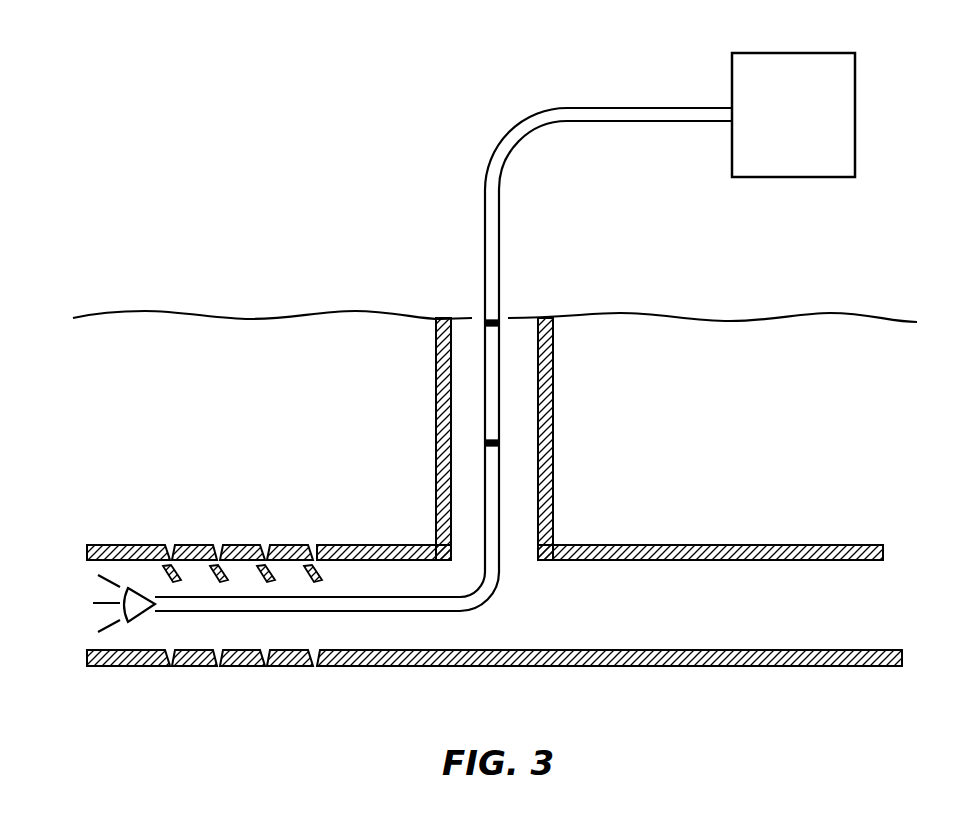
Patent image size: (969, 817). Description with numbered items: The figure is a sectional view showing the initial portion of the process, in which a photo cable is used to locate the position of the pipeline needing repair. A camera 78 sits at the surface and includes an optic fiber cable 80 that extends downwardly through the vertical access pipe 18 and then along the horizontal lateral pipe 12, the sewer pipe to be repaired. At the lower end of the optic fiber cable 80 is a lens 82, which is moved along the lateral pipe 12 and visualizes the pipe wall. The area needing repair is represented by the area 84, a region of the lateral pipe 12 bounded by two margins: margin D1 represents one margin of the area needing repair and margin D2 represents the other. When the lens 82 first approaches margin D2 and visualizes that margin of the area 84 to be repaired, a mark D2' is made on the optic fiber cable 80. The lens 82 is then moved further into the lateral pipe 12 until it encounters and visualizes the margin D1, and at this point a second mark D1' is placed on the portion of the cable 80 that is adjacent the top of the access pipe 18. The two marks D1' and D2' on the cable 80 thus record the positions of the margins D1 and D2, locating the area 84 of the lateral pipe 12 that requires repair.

The lateral pipe 12 is at (87, 548).
The access pipe 18 is at (437, 500).
The camera 78 is at (757, 52).
The optic fiber cable 80 is at (488, 237).
The lens 82 is at (140, 617).
The area needing repair 84 is at (315, 536).
The margin of area needing repair D1 is at (132, 527).
The margin of area needing repair D2 is at (349, 524).
The cable mark D1' is at (458, 291).
The cable mark D2' is at (558, 410).